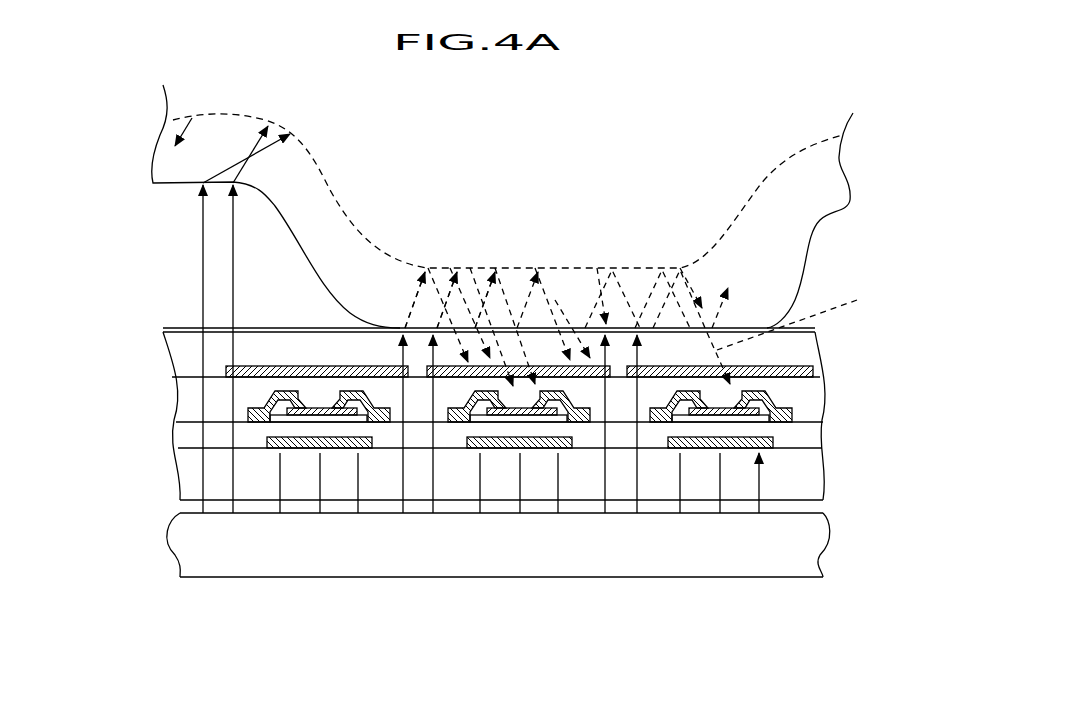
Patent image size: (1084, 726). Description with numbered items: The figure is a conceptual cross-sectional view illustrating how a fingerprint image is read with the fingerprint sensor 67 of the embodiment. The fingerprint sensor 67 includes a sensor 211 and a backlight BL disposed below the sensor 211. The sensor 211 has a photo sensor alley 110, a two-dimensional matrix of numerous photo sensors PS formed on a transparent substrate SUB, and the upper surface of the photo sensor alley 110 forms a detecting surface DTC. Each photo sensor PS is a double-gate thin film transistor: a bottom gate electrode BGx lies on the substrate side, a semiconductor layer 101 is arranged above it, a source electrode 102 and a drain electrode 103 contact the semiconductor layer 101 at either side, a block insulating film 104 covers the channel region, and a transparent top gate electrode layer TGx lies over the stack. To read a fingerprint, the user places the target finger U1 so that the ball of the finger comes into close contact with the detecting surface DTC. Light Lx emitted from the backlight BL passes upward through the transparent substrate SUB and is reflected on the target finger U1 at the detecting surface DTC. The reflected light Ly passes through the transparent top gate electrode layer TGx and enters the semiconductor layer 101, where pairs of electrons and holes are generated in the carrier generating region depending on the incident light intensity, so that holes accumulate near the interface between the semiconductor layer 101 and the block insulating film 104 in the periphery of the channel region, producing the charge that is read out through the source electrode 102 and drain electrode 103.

The target finger U1 is at (866, 141).
The photo sensor alley 110 is at (500, 411).
The detecting surface DTC is at (185, 327).
The top gate electrode layer TGx is at (317, 364).
The bottom gate electrode BGx is at (775, 442).
The semiconductor layer 101 is at (278, 423).
The source electrode 102 is at (260, 402).
The drain electrode 103 is at (378, 422).
The block insulating film 104 is at (307, 407).
The light emitted from the backlight Lx is at (202, 468).
The reflected light Ly is at (644, 327).
The photo sensor PS is at (578, 452).
The transparent substrate SUB is at (822, 478).
The sensor 211 is at (830, 501).
The backlight BL is at (885, 530).
The fingerprint sensor 67 is at (552, 575).